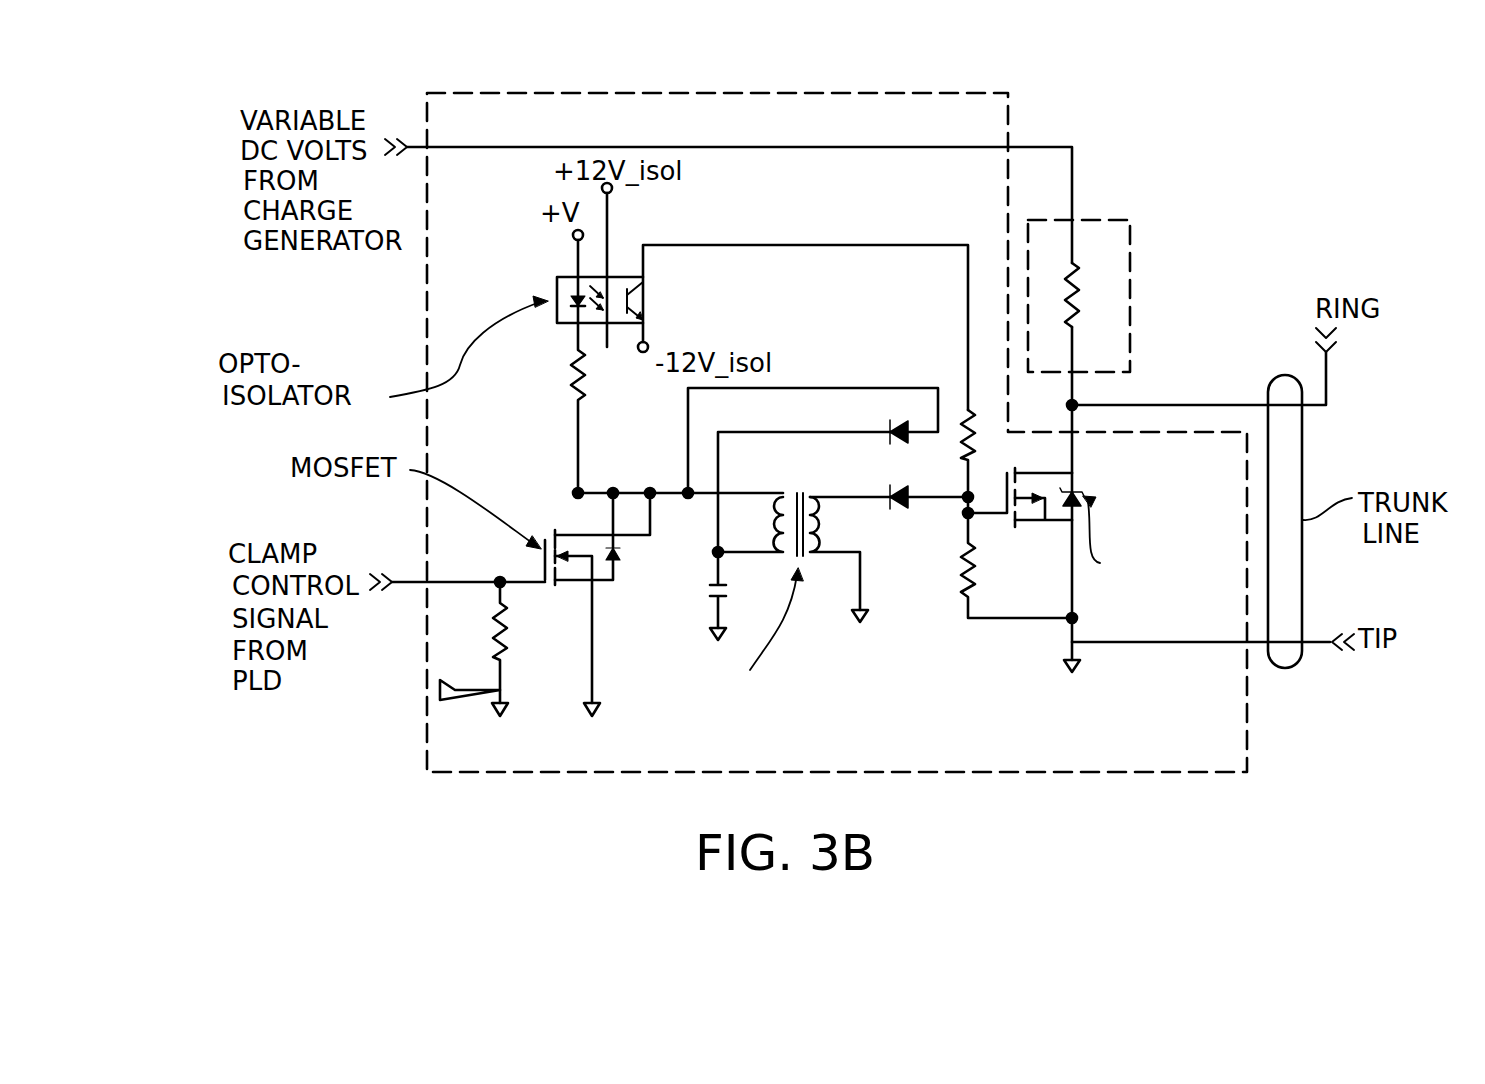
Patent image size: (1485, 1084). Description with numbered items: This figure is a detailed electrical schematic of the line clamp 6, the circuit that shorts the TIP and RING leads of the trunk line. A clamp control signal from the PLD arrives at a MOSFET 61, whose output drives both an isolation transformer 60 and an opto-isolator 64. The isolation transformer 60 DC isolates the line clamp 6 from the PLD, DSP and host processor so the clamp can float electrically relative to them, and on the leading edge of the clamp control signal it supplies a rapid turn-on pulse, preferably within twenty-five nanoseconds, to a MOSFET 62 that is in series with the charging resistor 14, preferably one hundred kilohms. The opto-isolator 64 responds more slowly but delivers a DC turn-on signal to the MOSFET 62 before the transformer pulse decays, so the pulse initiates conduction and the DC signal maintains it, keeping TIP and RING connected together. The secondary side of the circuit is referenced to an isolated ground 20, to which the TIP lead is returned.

The line clamp 6 is at (912, 93).
The charging resistor 14 is at (1105, 220).
The isolated ground 20 is at (870, 632).
The isolation transformer 60 is at (788, 488).
The MOSFET 61 is at (628, 587).
The MOSFET 62 is at (1046, 527).
The opto-isolator 64 is at (650, 291).